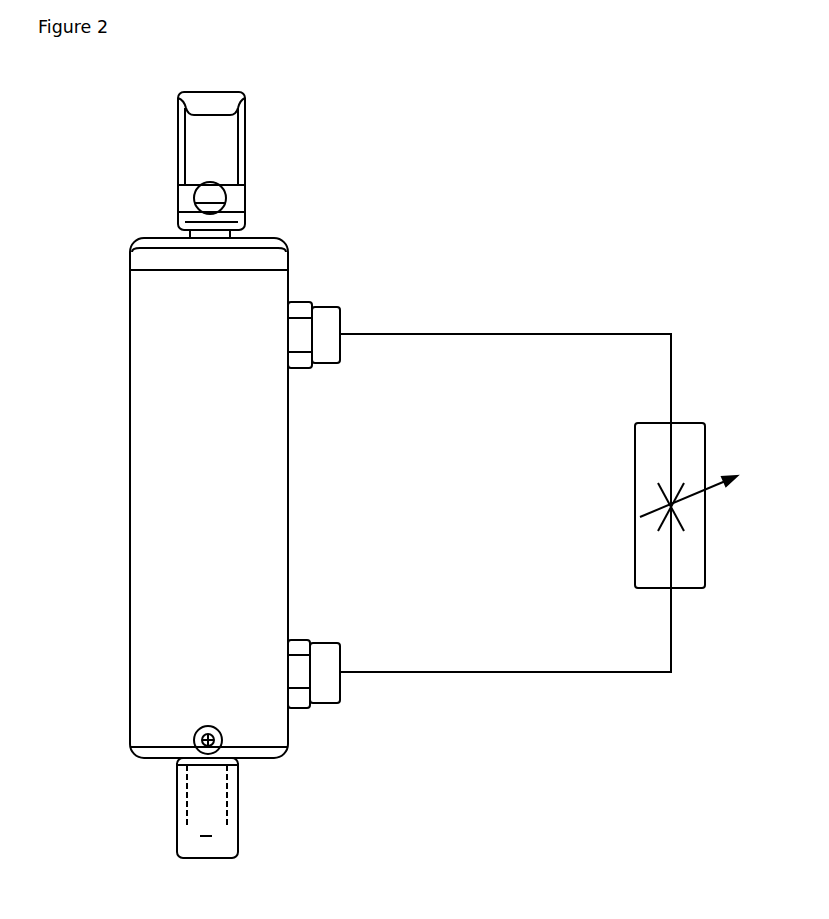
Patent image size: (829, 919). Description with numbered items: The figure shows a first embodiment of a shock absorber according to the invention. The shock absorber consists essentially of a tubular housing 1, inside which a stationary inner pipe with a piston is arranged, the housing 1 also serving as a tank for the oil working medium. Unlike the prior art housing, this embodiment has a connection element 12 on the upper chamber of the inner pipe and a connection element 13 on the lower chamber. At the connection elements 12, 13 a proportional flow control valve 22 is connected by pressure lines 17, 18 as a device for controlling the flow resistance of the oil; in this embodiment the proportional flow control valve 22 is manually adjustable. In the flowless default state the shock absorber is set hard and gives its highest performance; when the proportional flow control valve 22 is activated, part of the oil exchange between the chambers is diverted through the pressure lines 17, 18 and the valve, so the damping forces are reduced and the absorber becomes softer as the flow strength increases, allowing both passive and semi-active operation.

The housing 1 is at (220, 543).
The connection element 12 is at (330, 318).
The connection element 13 is at (330, 652).
The pressure line 17 is at (498, 333).
The pressure line 18 is at (562, 672).
The proportional flow control valve 22 is at (692, 567).